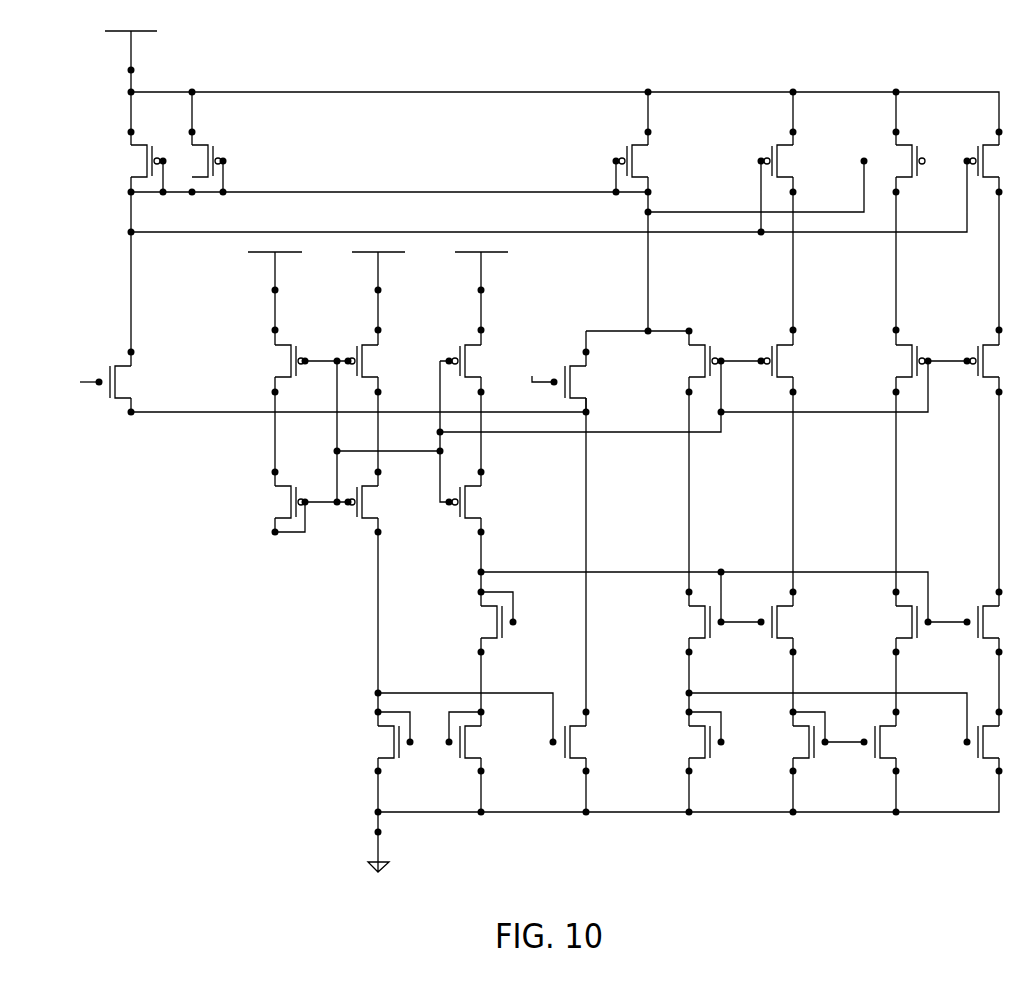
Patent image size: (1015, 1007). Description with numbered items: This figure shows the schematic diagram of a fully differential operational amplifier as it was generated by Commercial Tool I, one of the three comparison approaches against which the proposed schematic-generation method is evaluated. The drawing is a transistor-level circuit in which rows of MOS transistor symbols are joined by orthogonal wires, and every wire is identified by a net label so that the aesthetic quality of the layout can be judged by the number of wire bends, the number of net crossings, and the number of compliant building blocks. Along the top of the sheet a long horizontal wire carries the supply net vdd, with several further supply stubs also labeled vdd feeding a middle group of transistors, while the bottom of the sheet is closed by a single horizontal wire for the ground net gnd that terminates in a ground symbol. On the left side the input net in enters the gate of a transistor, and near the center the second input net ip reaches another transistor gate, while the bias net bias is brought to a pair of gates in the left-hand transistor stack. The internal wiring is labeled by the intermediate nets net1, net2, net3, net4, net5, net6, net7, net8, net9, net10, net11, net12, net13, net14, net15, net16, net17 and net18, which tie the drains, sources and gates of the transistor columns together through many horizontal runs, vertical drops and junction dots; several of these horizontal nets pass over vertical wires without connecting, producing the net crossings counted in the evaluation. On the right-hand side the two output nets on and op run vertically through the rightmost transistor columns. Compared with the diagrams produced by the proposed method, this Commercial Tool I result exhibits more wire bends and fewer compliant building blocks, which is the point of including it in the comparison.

The supply voltage node vdd is at (554, 188).
The ground node gnd is at (670, 815).
The input terminal in is at (82, 372).
The positive input terminal ip is at (541, 369).
The bias terminal bias is at (295, 531).
The net 1 net1 is at (359, 431).
The net 2 net2 is at (430, 692).
The net 3 net3 is at (373, 432).
The net 4 net4 is at (724, 572).
The net 5 net5 is at (704, 432).
The net 6 net6 is at (875, 261).
The net 7 net7 is at (669, 491).
The net 8 net8 is at (623, 289).
The net 9 net9 is at (772, 491).
The net 10 net10 is at (781, 261).
The net 11 net11 is at (984, 261).
The net 12 net12 is at (522, 262).
The net 13 net13 is at (374, 431).
The net 14 net14 is at (482, 572).
The net 15 net15 is at (882, 682).
The net 16 net16 is at (809, 692).
The net 17 net17 is at (809, 692).
The net 18 net18 is at (986, 682).
The negative output terminal on is at (881, 491).
The positive output terminal op is at (987, 491).